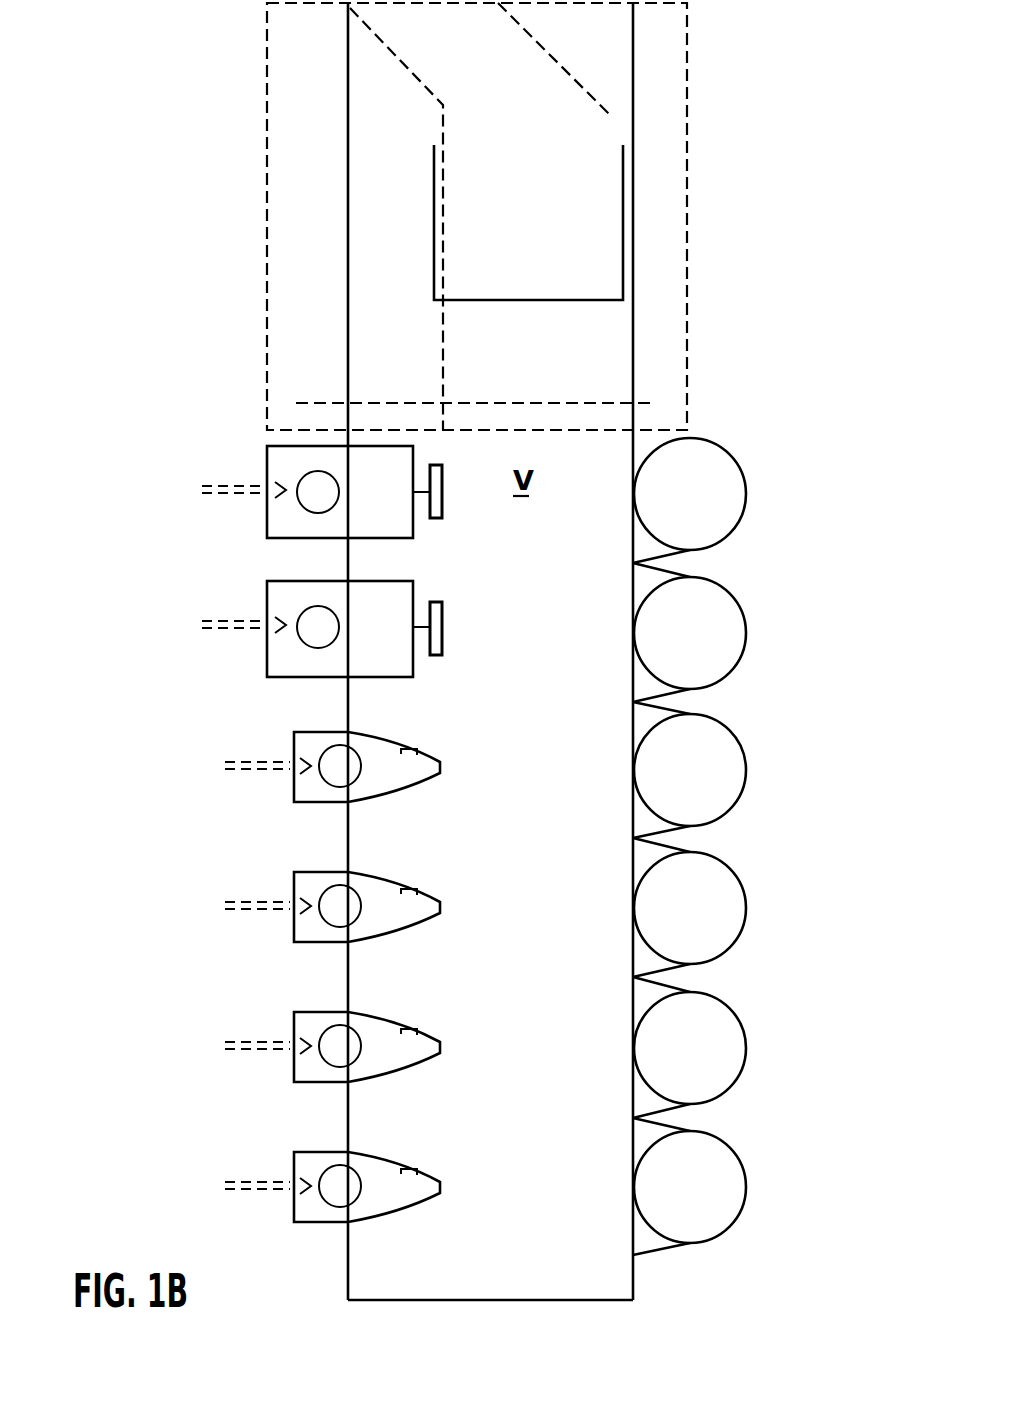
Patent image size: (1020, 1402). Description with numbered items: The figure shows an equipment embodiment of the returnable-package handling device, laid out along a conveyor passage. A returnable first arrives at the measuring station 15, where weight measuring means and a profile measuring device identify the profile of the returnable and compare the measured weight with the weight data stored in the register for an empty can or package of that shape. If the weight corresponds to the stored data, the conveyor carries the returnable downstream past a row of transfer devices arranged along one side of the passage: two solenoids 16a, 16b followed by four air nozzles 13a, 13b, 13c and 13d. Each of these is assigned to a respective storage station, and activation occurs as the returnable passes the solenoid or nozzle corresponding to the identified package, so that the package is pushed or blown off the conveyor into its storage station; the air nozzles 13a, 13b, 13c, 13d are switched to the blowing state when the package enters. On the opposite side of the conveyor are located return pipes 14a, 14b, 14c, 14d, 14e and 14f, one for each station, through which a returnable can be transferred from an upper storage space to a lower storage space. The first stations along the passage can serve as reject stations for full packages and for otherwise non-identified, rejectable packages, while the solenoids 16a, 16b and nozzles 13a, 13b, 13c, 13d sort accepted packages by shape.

The air nozzle 13a is at (294, 743).
The air nozzle 13b is at (294, 883).
The air nozzle 13c is at (294, 1023).
The air nozzle 13d is at (294, 1165).
The return pipe 14a is at (738, 494).
The return pipe 14b is at (738, 640).
The return pipe 14c is at (738, 772).
The return pipe 14d is at (738, 910).
The return pipe 14e is at (738, 1052).
The return pipe 14f is at (738, 1192).
The measuring station 15 is at (615, 456).
The solenoid 16a is at (267, 606).
The solenoid 16b is at (267, 510).